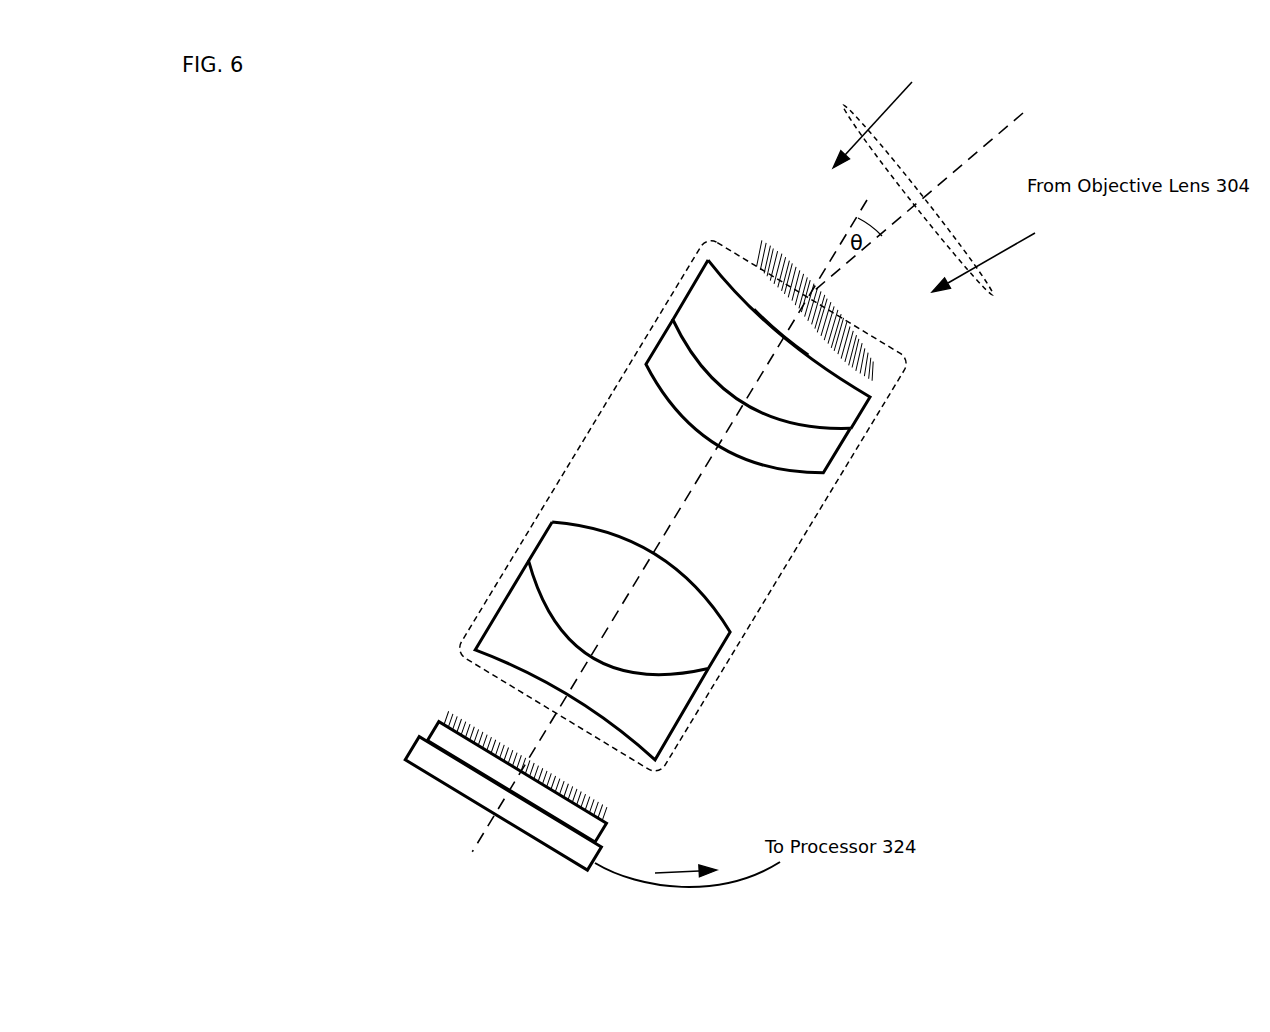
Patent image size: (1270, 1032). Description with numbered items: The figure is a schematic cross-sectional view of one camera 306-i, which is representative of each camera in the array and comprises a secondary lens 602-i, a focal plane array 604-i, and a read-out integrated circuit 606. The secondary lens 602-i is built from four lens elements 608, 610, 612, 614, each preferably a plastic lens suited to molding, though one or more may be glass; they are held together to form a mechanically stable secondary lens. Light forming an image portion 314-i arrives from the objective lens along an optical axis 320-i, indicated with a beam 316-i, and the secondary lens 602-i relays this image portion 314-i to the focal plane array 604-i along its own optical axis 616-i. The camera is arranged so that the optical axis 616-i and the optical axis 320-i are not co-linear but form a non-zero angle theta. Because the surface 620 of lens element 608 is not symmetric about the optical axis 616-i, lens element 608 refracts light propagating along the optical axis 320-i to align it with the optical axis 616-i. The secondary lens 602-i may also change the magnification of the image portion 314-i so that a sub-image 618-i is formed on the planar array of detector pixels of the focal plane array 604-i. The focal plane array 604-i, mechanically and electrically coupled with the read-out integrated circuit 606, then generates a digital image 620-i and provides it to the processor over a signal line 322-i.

The camera 306-i is at (337, 256).
The image portion 314-i is at (747, 233).
The light beam 316-i is at (993, 297).
The optical axis 320-i is at (1007, 128).
The secondary lens 602-i is at (658, 307).
The lens element 608 is at (729, 332).
The lens element 610 is at (699, 389).
The lens element 612 is at (579, 584).
The lens element 614 is at (541, 647).
The optical axis 616-i is at (680, 510).
The surface 620 is at (772, 330).
The sub-image 618-i is at (462, 718).
The focal plane array 604-i is at (447, 740).
The read-out integrated circuit 606 is at (428, 760).
The digital image 620-i is at (686, 857).
The signal line 322-i is at (765, 878).